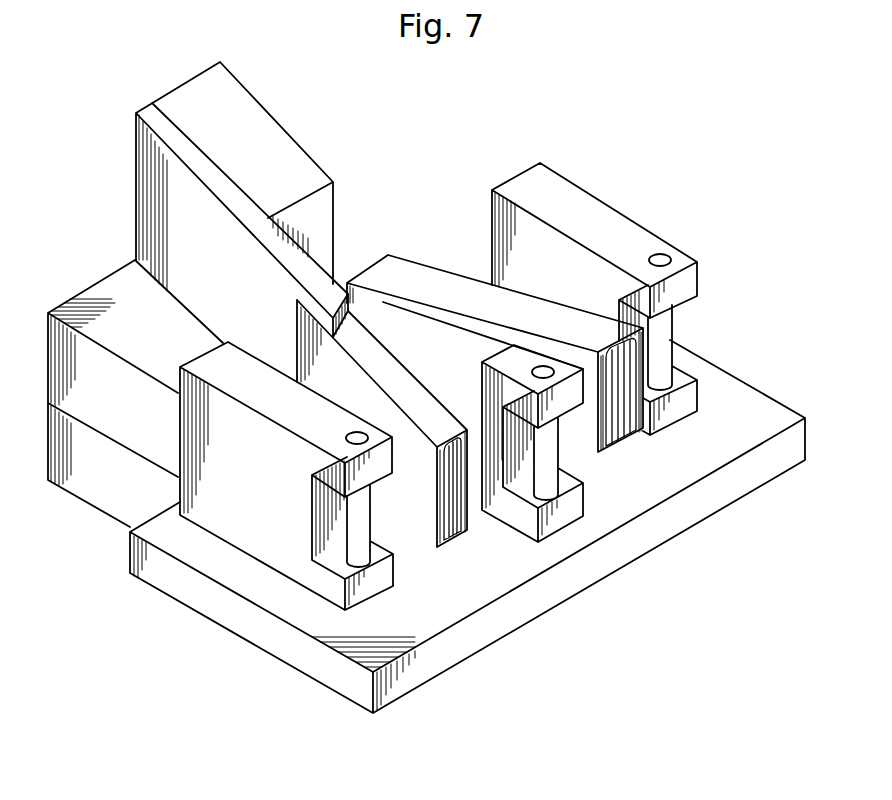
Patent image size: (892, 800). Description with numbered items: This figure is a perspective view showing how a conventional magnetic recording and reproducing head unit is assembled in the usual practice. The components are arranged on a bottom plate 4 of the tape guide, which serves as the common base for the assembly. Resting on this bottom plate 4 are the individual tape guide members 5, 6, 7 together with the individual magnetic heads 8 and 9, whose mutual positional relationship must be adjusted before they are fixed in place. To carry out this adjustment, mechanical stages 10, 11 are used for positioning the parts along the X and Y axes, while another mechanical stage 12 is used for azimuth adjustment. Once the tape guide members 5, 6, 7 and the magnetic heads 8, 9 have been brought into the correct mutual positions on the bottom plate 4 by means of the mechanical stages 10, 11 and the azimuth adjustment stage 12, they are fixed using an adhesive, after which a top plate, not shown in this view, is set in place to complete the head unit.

The bottom plate 4 is at (468, 600).
The tape guide member 5 is at (243, 530).
The tape guide member 6 is at (571, 510).
The tape guide member 7 is at (679, 407).
The magnetic head 8 is at (357, 338).
The magnetic head 9 is at (444, 290).
The mechanical stage 10 is at (103, 296).
The mechanical stage 11 is at (102, 490).
The mechanical stage 12 is at (177, 102).